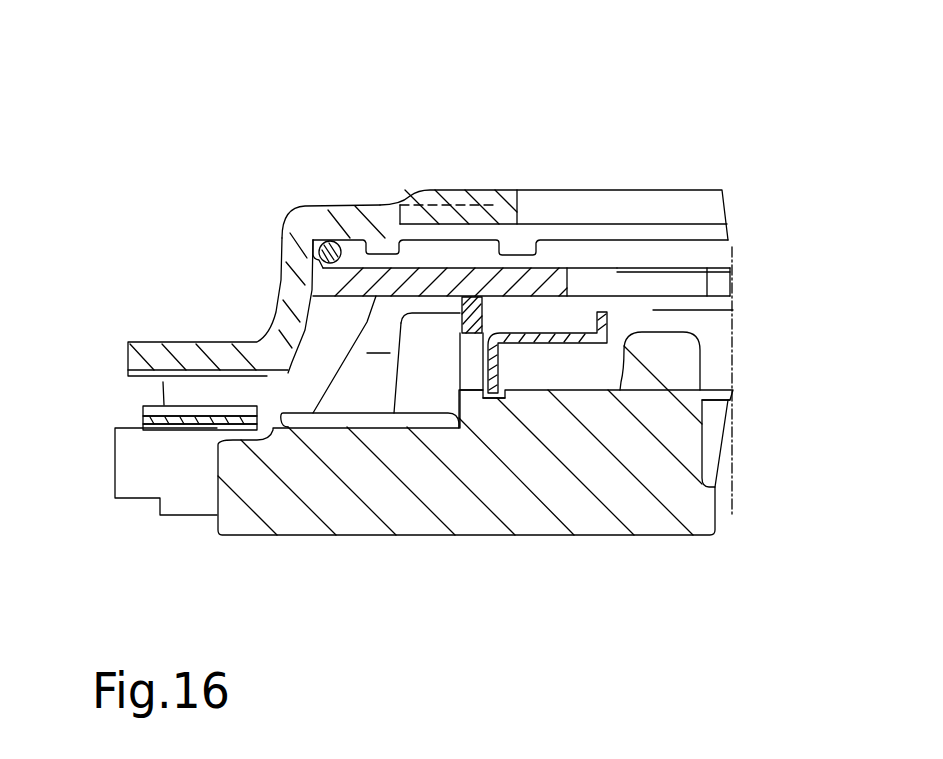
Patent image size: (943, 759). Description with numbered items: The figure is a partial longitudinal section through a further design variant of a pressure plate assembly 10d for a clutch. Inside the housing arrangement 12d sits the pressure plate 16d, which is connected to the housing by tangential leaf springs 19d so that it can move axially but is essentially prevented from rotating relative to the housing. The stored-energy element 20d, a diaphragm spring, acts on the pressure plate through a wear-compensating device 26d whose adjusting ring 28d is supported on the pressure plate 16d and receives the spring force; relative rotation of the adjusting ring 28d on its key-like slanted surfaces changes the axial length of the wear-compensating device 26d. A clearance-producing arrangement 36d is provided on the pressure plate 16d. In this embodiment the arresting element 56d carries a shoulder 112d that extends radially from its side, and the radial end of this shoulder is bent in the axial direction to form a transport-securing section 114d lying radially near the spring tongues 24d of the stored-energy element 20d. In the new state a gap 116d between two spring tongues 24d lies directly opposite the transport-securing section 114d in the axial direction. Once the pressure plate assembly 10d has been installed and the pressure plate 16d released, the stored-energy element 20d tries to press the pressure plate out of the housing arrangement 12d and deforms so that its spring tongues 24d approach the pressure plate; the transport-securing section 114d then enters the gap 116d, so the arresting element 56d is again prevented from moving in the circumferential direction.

The pressure plate assembly 10d is at (698, 133).
The housing arrangement 12d is at (471, 192).
The pressure plate 16d is at (624, 524).
The tangential leaf springs 19d is at (143, 418).
The stored-energy element 20d is at (347, 413).
The spring tongues 24d is at (683, 265).
The wear-compensating device 26d is at (422, 320).
The adjusting ring 28d is at (460, 338).
The clearance-producing arrangement 36d is at (573, 370).
The arresting element 56d is at (505, 398).
The shoulder 112d is at (532, 333).
The transport-securing section 114d is at (610, 326).
The gap 116d is at (592, 280).